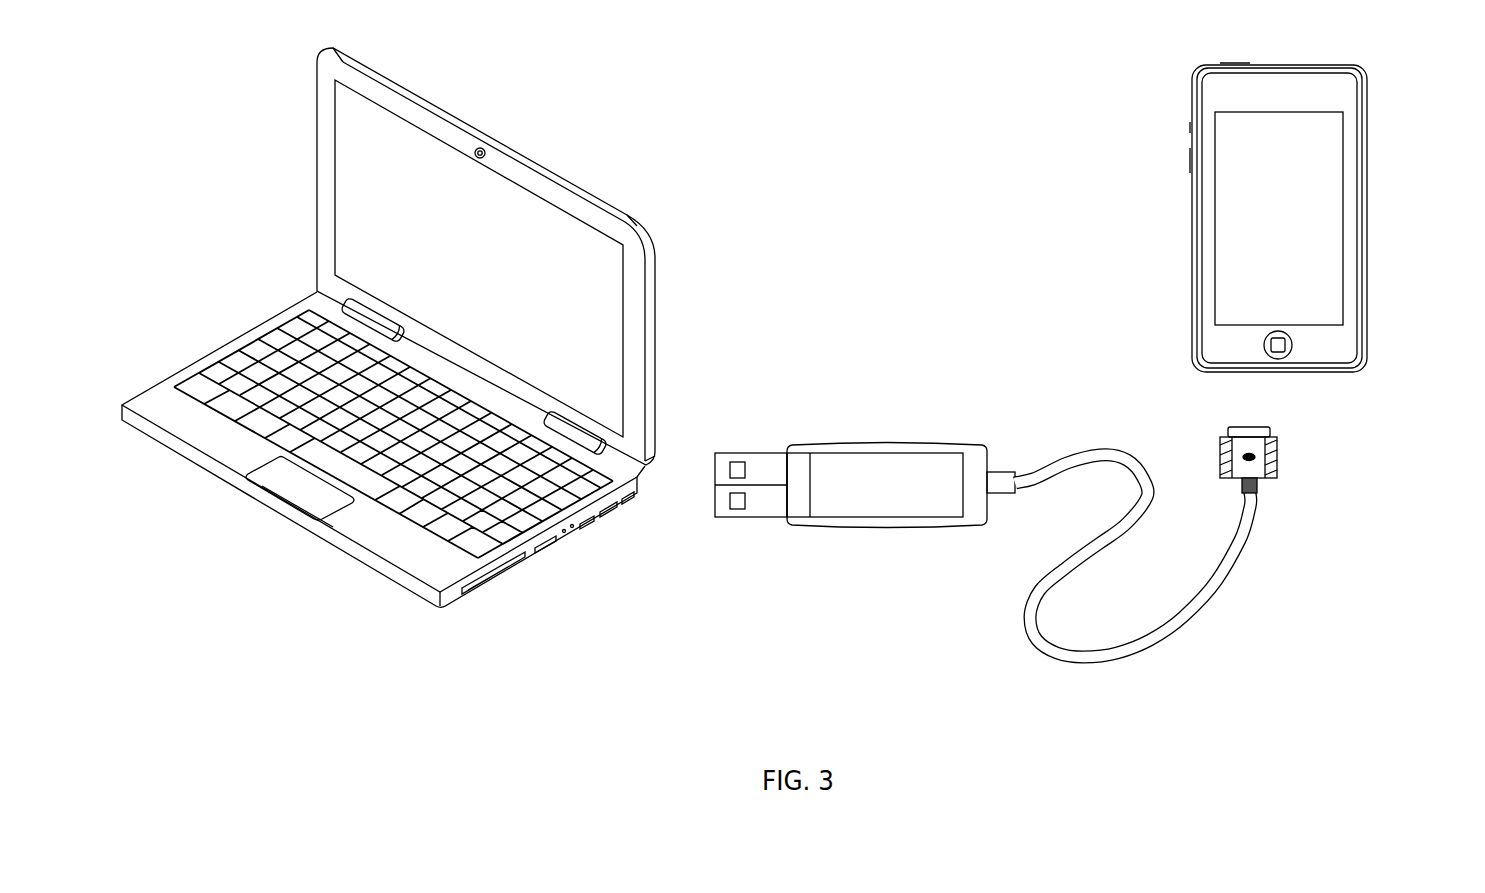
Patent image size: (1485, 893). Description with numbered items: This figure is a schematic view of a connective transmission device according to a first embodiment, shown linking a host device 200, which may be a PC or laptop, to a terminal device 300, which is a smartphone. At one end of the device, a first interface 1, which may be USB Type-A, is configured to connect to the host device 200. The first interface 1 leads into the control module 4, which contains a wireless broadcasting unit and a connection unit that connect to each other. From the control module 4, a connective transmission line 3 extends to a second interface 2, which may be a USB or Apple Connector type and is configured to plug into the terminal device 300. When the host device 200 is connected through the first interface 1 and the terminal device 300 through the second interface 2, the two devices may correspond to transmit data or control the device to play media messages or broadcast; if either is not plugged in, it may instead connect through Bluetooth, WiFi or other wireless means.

The host device 200 is at (566, 198).
The terminal device 300 is at (1350, 102).
The first interface 1 is at (763, 508).
The second interface 2 is at (1280, 440).
The connective transmission line 3 is at (1197, 618).
The control module 4 is at (860, 462).